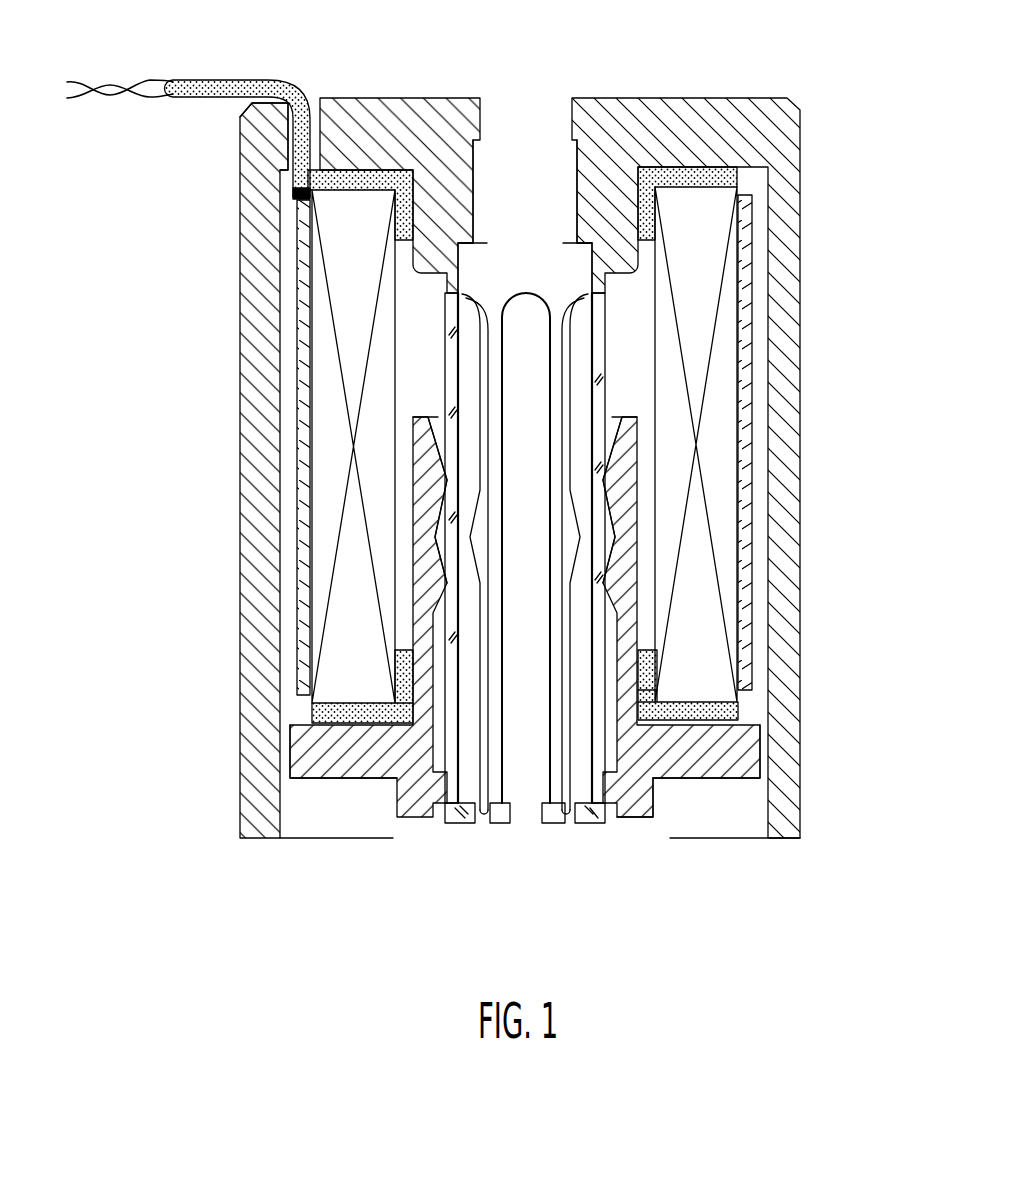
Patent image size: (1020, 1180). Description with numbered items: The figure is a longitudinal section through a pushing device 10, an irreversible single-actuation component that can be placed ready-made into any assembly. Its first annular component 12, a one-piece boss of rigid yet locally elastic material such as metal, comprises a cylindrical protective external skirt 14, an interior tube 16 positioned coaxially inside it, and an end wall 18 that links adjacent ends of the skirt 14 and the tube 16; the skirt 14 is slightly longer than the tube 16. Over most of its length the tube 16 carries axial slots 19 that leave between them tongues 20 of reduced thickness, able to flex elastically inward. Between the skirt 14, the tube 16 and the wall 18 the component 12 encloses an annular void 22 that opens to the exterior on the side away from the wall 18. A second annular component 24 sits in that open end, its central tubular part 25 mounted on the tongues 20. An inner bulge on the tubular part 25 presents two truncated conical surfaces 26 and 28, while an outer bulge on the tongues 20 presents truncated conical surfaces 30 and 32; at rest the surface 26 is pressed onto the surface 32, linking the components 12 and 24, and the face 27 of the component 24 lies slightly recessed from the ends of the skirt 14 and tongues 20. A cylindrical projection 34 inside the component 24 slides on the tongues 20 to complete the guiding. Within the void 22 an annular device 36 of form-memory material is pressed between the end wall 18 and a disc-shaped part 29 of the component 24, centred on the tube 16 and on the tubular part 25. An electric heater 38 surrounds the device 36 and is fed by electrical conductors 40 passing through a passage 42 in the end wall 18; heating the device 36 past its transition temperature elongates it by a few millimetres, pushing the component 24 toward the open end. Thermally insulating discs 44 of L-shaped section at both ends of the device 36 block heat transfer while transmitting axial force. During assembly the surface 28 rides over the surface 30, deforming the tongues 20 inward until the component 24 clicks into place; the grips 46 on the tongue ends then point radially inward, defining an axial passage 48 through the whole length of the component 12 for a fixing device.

The pushing device 10 is at (810, 283).
The first annular component 12 is at (244, 390).
The protective external skirt 14 is at (265, 550).
The interior tube 16 is at (578, 278).
The end wall 18 is at (737, 137).
The slots 19 is at (545, 613).
The tongues 20 is at (560, 765).
The annular void 22 is at (292, 240).
The second annular component 24 is at (290, 758).
The central tubular part 25 is at (655, 690).
The truncated conical surface 26 is at (612, 532).
The face 27 is at (700, 778).
The truncated conical surface 28 is at (612, 430).
The disc-shaped part 29 is at (760, 760).
The truncated conical surface 30 is at (440, 570).
The truncated conical surface 32 is at (445, 497).
The cylindrical projection 34 is at (598, 760).
The annular device 36 is at (725, 468).
The electric heater 38 is at (300, 322).
The electrical conductors 40 is at (122, 85).
The passage 42 is at (293, 125).
The thermally insulating discs 44 is at (320, 705).
The grips 46 is at (460, 812).
The axial passage 48 is at (495, 815).